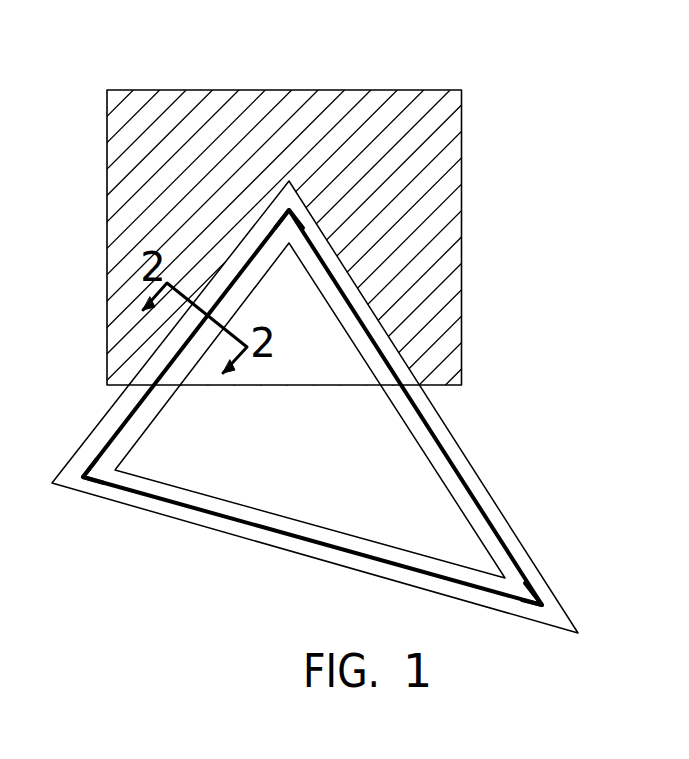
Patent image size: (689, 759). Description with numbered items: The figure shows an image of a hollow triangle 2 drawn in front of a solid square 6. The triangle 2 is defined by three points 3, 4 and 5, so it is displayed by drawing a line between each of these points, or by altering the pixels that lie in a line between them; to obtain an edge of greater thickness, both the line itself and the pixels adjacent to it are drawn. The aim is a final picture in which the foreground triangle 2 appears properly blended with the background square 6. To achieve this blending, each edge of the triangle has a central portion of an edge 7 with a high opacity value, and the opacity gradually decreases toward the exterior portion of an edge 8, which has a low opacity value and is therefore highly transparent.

The hollow triangle 2 is at (472, 462).
The point 3 is at (283, 213).
The point 4 is at (547, 597).
The point 5 is at (84, 476).
The solid square 6 is at (462, 157).
The central portion of an edge 7 is at (168, 367).
The exterior portion of an edge 8 is at (143, 364).